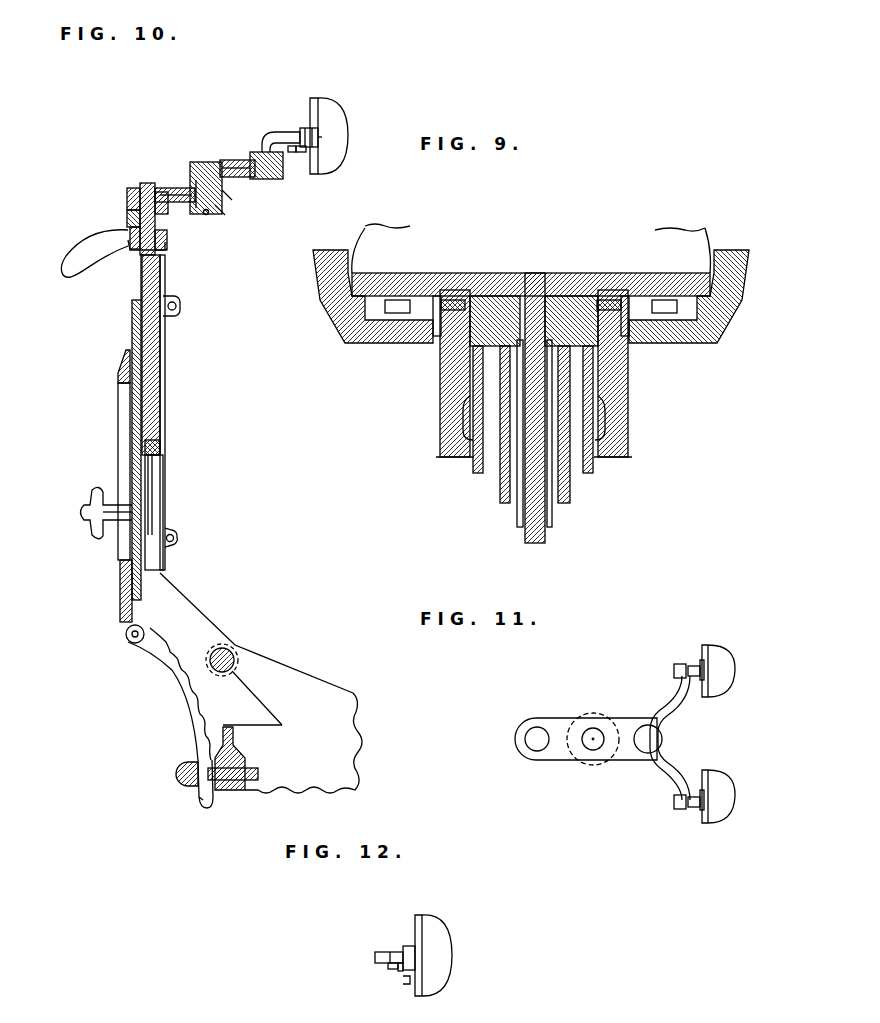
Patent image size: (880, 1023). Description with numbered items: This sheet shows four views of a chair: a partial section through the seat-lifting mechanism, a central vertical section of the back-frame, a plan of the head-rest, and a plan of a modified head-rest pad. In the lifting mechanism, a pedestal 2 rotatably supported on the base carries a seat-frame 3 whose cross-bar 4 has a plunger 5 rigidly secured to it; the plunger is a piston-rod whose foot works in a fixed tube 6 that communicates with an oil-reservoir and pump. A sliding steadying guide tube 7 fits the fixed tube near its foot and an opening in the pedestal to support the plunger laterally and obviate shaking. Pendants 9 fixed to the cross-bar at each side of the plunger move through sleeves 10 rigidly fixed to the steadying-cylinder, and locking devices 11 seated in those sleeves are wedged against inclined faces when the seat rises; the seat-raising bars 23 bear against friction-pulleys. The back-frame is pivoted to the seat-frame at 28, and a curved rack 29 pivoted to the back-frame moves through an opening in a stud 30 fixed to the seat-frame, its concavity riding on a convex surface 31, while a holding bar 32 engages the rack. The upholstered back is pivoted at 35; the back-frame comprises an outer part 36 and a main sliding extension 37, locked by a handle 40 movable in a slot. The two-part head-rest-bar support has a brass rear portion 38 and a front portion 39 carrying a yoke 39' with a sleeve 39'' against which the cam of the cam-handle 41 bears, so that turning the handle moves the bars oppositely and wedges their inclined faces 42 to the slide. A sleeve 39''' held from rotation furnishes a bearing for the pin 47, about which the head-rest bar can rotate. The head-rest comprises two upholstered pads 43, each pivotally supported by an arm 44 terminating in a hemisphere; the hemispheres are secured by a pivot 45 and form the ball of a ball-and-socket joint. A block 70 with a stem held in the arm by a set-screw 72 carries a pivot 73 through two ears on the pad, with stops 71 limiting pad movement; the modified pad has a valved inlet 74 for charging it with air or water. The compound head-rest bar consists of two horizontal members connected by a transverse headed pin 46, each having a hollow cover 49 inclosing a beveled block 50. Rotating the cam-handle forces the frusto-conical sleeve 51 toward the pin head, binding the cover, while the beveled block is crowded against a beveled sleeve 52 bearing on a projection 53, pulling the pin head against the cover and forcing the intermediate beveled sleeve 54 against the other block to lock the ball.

In FIG. 9, the pedestal 2 is at (593, 470).
In FIG. 10, the seat-frame 3 is at (245, 750).
In FIG. 9, the seat-frame 3 is at (338, 318).
In FIG. 9, the cross-bar 4 is at (478, 273).
In FIG. 9, the plunger 5 is at (545, 540).
In FIG. 9, the fixed tube 6 is at (577, 296).
In FIG. 9, the sliding steadying guide tube 7 is at (570, 498).
In FIG. 9, the pendants 9 is at (440, 402).
In FIG. 9, the sleeves 10 is at (435, 345).
In FIG. 9, the locking devices 11 is at (448, 355).
In FIG. 9, the seat-raising bars 23 is at (537, 302).
In FIG. 10, the back-frame pivot 28 is at (237, 652).
In FIG. 10, the curved rack 29 is at (178, 662).
In FIG. 10, the stud 30 is at (176, 777).
In FIG. 10, the convex surface 31 is at (200, 808).
In FIG. 10, the holding bar 32 is at (232, 795).
In FIG. 10, the back pivot 35 is at (180, 306).
In FIG. 10, the outer part 36 is at (118, 597).
In FIG. 10, the main sliding extension 37 is at (165, 560).
In FIG. 10, the rear portion of head-rest-bar support 38 is at (163, 372).
In FIG. 10, the front portion of head-rest-bar support 39 is at (172, 355).
In FIG. 10, the yoke 39' is at (168, 253).
In FIG. 10, the sleeve 39'' is at (124, 228).
In FIG. 10, the sleeve 39''' is at (125, 178).
In FIG. 10, the handle 40 is at (80, 514).
In FIG. 10, the cam-handle 41 is at (78, 258).
In FIG. 10, the inclined faces 42 is at (160, 445).
In FIG. 10, the upholstered pads 43 is at (345, 112).
In FIG. 11, the upholstered pads 43 is at (715, 690).
In FIG. 12, the upholstered pads 43 is at (452, 955).
In FIG. 10, the arm 44 is at (272, 135).
In FIG. 11, the arm 44 is at (672, 752).
In FIG. 12, the arm 44 is at (375, 957).
In FIG. 10, the pivot 45 is at (264, 180).
In FIG. 10, the transverse headed pin 46 is at (205, 162).
In FIG. 11, the transverse headed pin 46 is at (593, 750).
In FIG. 10, the pin 47 is at (147, 183).
In FIG. 11, the pin 47 is at (525, 741).
In FIG. 10, the hollow cover 49 is at (178, 188).
In FIG. 11, the hollow cover 49 is at (600, 700).
In FIG. 10, the beveled block 50 is at (200, 205).
In FIG. 10, the frusto-conical sleeve 51 is at (125, 205).
In FIG. 10, the beveled sleeve 52 is at (222, 212).
In FIG. 10, the projection 53 is at (207, 215).
In FIG. 10, the intermediate beveled sleeve 54 is at (232, 200).
In FIG. 10, the block 70 is at (305, 127).
In FIG. 10, the stops 71 is at (322, 137).
In FIG. 11, the stops 71 is at (703, 660).
In FIG. 12, the stops 71 is at (400, 971).
In FIG. 10, the set-screw 72 is at (290, 152).
In FIG. 11, the set-screw 72 is at (676, 664).
In FIG. 12, the set-screw 72 is at (392, 969).
In FIG. 10, the pivot 73 is at (302, 152).
In FIG. 11, the pivot 73 is at (694, 666).
In FIG. 12, the pivot 73 is at (406, 946).
In FIG. 12, the valved inlet 74 is at (407, 984).